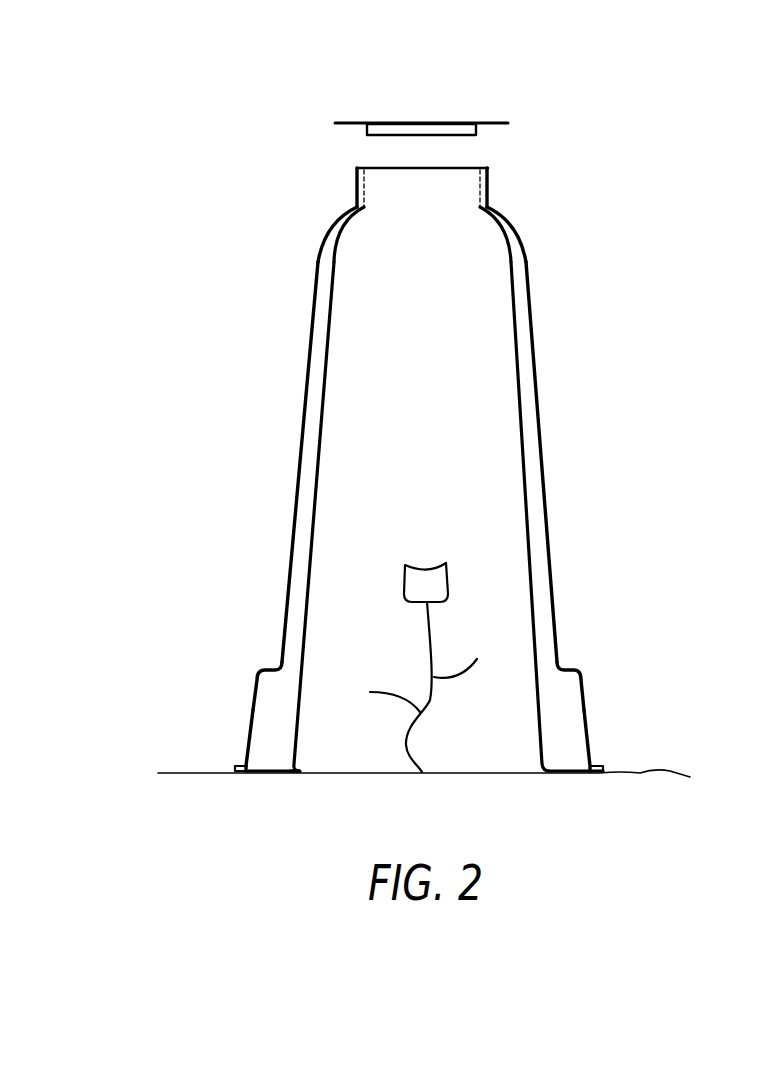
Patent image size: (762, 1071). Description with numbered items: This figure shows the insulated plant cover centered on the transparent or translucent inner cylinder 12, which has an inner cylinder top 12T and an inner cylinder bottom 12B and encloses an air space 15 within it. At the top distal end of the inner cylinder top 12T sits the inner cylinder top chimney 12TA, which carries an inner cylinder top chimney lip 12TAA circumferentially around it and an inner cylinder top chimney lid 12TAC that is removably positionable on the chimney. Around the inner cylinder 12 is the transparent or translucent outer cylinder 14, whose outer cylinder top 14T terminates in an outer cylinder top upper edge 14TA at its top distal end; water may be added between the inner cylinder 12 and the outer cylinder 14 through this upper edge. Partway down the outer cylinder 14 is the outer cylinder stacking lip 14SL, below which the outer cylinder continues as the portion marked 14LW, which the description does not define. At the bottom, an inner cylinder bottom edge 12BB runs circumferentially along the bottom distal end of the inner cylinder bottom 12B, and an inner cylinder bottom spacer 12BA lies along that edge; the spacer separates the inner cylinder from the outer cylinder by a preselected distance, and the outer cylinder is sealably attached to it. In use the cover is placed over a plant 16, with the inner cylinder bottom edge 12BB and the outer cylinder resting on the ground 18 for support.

The inner cylinder 12 is at (386, 461).
The inner cylinder top 12T is at (513, 235).
The inner cylinder top chimney 12TA is at (354, 182).
The inner cylinder top chimney lip 12TAA is at (397, 166).
The inner cylinder top chimney lid 12TAC is at (398, 122).
The inner cylinder bottom 12B is at (297, 728).
The inner cylinder bottom spacer 12BA is at (250, 772).
The inner cylinder bottom edge 12BB is at (293, 772).
The outer cylinder 14 is at (415, 439).
The outer cylinder top 14T is at (327, 232).
The outer cylinder top upper edge 14TA is at (488, 168).
The outer cylinder stacking lip 14SL is at (260, 673).
The lower wall of outer sleeve 14LW is at (590, 732).
The air space 15 is at (420, 412).
The plant 16 is at (450, 577).
The ground 18 is at (625, 773).